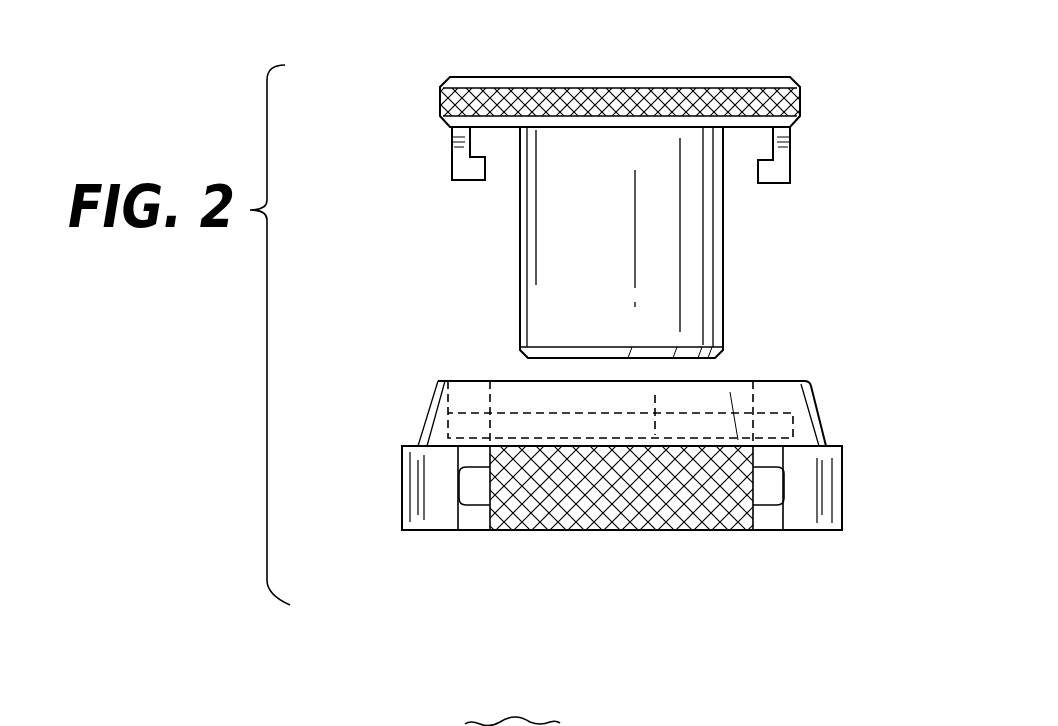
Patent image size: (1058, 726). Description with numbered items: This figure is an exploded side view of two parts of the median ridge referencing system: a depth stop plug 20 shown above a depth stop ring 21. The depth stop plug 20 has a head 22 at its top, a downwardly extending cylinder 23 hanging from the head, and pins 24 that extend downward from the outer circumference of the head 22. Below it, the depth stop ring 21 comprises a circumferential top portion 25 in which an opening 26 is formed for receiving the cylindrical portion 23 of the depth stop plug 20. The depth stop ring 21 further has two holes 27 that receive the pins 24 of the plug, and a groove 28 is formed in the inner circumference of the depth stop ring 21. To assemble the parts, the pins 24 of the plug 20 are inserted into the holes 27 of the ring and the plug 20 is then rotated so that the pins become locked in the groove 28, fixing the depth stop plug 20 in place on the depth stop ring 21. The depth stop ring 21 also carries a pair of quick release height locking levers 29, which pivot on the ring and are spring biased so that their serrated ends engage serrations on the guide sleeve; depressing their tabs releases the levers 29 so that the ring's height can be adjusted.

The depth stop plug 20 is at (778, 50).
The depth stop ring 21 is at (405, 558).
The head 22 is at (540, 77).
The downwardly extending cylinder 23 is at (723, 250).
The pins 24 is at (453, 165).
The circumferential top portion 25 is at (440, 381).
The opening 26 is at (597, 503).
The holes 27 is at (465, 408).
The groove 28 is at (425, 418).
The quick release height locking levers 29 is at (402, 503).